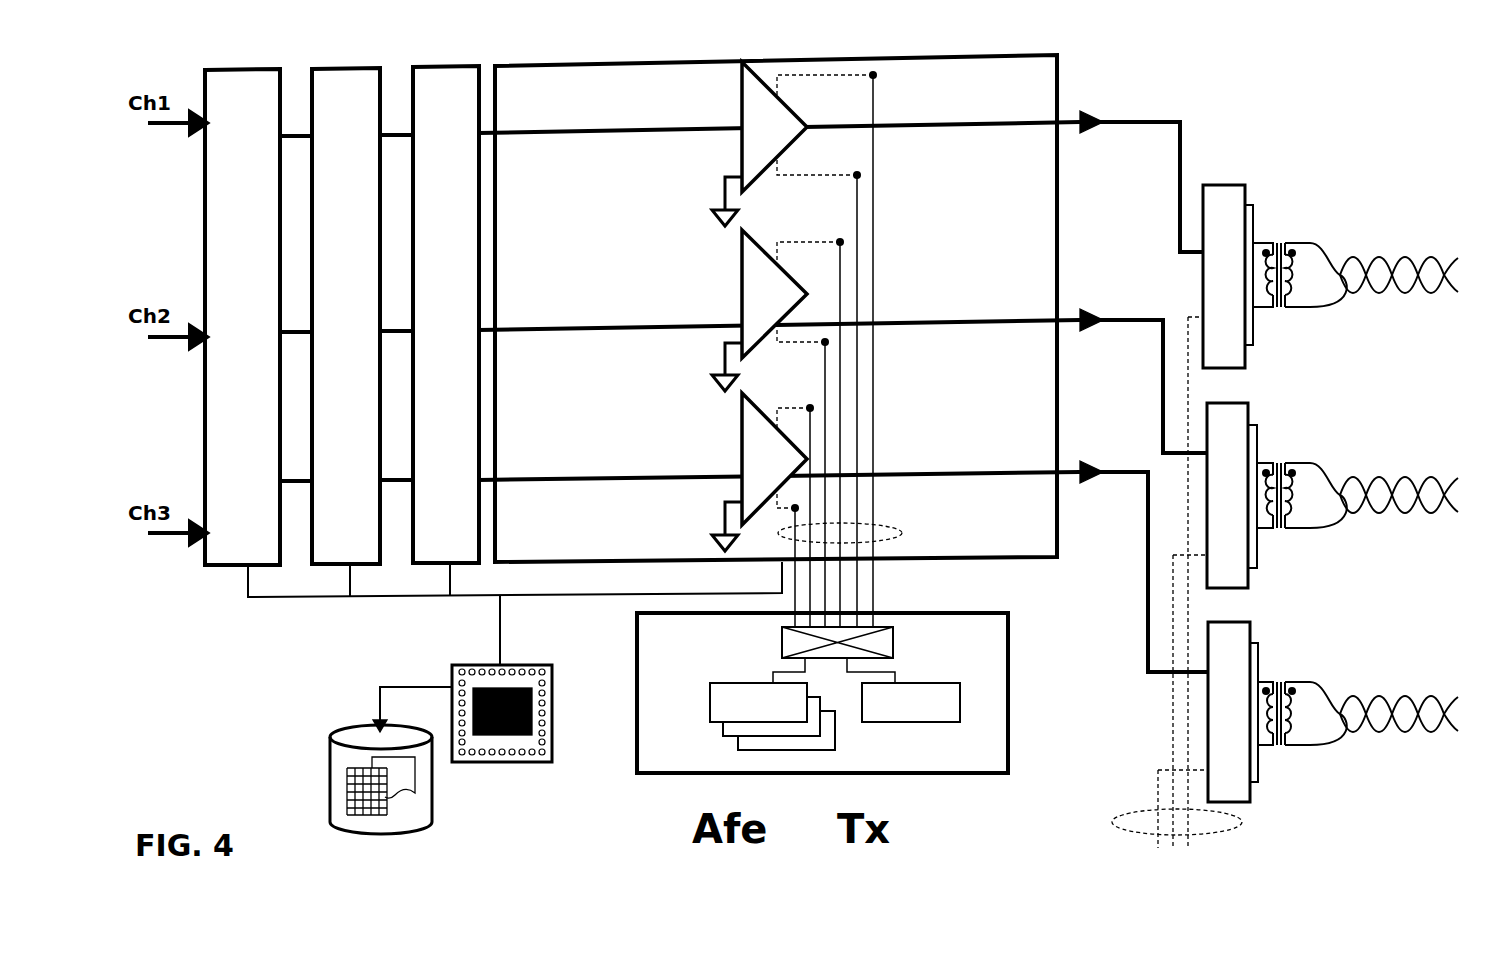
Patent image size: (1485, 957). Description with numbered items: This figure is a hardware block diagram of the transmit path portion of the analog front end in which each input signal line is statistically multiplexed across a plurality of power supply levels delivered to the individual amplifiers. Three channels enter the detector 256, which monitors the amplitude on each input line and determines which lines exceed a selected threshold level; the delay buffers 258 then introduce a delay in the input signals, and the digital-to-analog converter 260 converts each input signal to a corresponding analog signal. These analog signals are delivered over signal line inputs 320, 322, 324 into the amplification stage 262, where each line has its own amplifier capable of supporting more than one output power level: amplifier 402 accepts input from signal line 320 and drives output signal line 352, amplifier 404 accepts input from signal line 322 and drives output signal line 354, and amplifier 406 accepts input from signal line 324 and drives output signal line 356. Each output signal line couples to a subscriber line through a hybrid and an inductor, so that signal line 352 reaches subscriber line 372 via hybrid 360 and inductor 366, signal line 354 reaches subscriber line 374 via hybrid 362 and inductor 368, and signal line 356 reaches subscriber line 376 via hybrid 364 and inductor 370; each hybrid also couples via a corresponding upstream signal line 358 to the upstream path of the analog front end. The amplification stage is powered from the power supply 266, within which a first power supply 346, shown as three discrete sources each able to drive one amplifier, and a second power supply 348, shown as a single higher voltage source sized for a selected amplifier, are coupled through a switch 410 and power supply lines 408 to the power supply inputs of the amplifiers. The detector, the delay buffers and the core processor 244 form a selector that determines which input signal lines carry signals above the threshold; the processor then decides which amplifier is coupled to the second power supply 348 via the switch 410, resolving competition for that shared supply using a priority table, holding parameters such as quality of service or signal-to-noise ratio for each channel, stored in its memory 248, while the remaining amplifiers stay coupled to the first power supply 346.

The core processor 244 is at (545, 740).
The memory 248 is at (362, 725).
The detector 256 is at (256, 95).
The delay buffers 258 is at (346, 90).
The digital-to-analog converter 260 is at (462, 90).
The amplification stage 262 is at (1000, 53).
The power supply 266 is at (1000, 662).
The signal line input 320 is at (510, 130).
The signal line input 322 is at (545, 330).
The signal line input 324 is at (545, 480).
The first power supply 346 is at (710, 700).
The second power supply 348 is at (933, 722).
The output signal line 352 is at (1140, 128).
The output signal line 354 is at (1112, 320).
The output signal line 356 is at (1110, 472).
The upstream signal lines 358 is at (1128, 810).
The hybrid 360 is at (1212, 176).
The hybrid 362 is at (1237, 406).
The hybrid 364 is at (1239, 628).
The inductor 366 is at (1279, 220).
The inductor 368 is at (1281, 436).
The inductor 370 is at (1282, 656).
The subscriber line 372 is at (1400, 262).
The subscriber line 374 is at (1403, 482).
The subscriber line 376 is at (1403, 700).
The amplifier 402 is at (742, 97).
The amplifier 404 is at (745, 272).
The amplifier 406 is at (750, 455).
The power supply lines 408 is at (878, 525).
The switch 410 is at (782, 640).